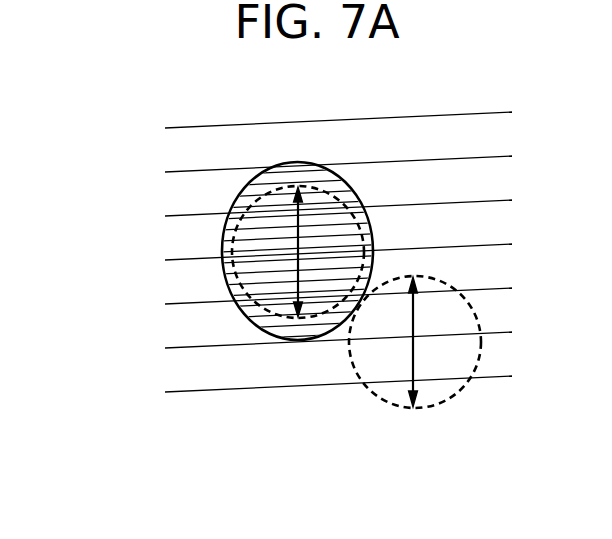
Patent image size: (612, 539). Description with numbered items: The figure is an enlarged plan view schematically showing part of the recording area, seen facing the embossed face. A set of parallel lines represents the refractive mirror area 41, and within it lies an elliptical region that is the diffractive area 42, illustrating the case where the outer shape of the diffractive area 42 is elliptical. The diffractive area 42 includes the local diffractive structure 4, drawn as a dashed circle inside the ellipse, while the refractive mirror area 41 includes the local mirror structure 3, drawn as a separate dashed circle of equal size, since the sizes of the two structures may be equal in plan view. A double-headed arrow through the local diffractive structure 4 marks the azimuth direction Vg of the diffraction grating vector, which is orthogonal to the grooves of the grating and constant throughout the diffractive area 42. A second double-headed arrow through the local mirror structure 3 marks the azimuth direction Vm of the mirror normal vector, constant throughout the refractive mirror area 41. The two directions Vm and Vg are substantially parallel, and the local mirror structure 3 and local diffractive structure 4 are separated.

The refractive mirror area 41 is at (202, 153).
The diffractive area 42 is at (301, 162).
The local diffractive structure 4 is at (272, 317).
The local mirror structure 3 is at (457, 394).
The azimuth direction of the diffraction grating vector Vg is at (300, 250).
The azimuth direction of the mirror normal vector Vm is at (418, 345).